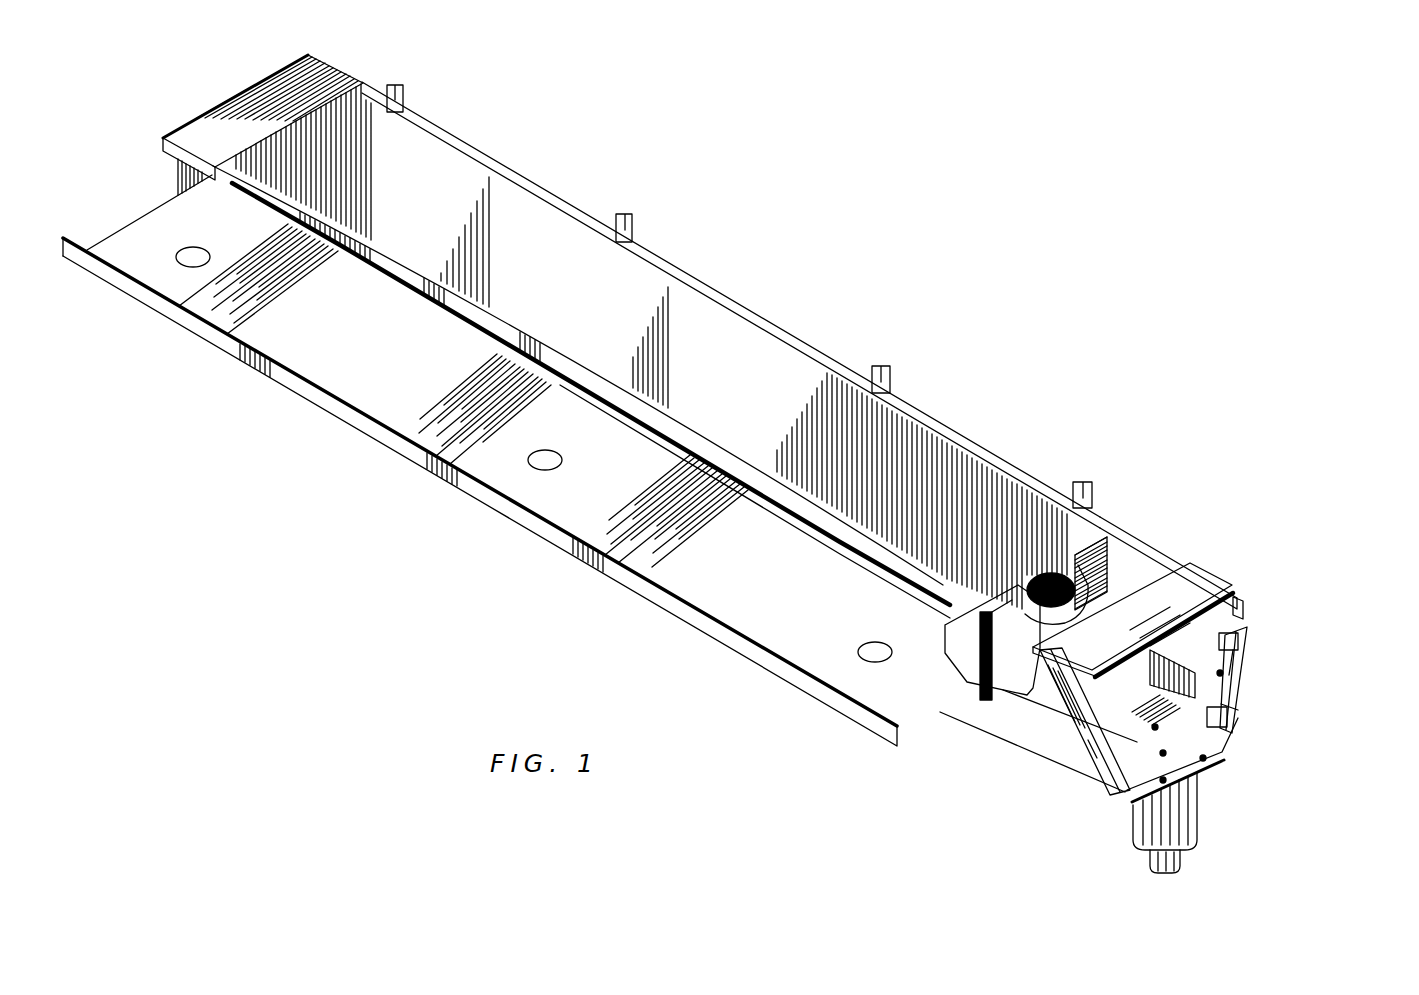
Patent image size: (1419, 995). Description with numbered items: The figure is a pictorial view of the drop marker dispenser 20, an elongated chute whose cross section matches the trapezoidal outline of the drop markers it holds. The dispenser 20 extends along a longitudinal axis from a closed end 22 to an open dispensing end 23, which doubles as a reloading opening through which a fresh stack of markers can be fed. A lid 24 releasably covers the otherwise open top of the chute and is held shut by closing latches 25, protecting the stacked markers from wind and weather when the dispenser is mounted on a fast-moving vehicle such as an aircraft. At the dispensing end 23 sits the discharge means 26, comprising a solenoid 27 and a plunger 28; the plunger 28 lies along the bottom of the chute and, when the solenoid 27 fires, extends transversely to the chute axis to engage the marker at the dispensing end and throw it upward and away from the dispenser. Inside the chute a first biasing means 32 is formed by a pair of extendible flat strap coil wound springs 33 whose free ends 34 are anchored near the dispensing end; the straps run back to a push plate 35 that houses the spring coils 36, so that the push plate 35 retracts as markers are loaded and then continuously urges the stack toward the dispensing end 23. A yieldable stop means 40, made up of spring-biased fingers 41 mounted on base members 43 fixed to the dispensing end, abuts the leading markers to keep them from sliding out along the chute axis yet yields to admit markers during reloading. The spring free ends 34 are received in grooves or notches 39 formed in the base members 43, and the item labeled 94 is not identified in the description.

The drop marker dispenser 20 is at (669, 228).
The closed end 22 is at (262, 160).
The open dispensing end 23 is at (1234, 612).
The lid 24 is at (367, 430).
The closing latches 25 is at (395, 84).
The discharge means 26 is at (1202, 823).
The solenoid 27 is at (1187, 852).
The plunger 28 is at (1158, 766).
The first biasing means 32 is at (1120, 527).
The flat strap coil wound springs 33 is at (1238, 648).
The free ends 34 is at (1245, 720).
The push plate 35 is at (1117, 570).
The spring coils 36 is at (946, 594).
The grooves or notches 39 is at (1224, 676).
The yieldable stop means 40 is at (1257, 638).
The spring-biased fingers 41 is at (1132, 616).
The base members 43 is at (1247, 667).
The top plate 94 is at (1217, 583).